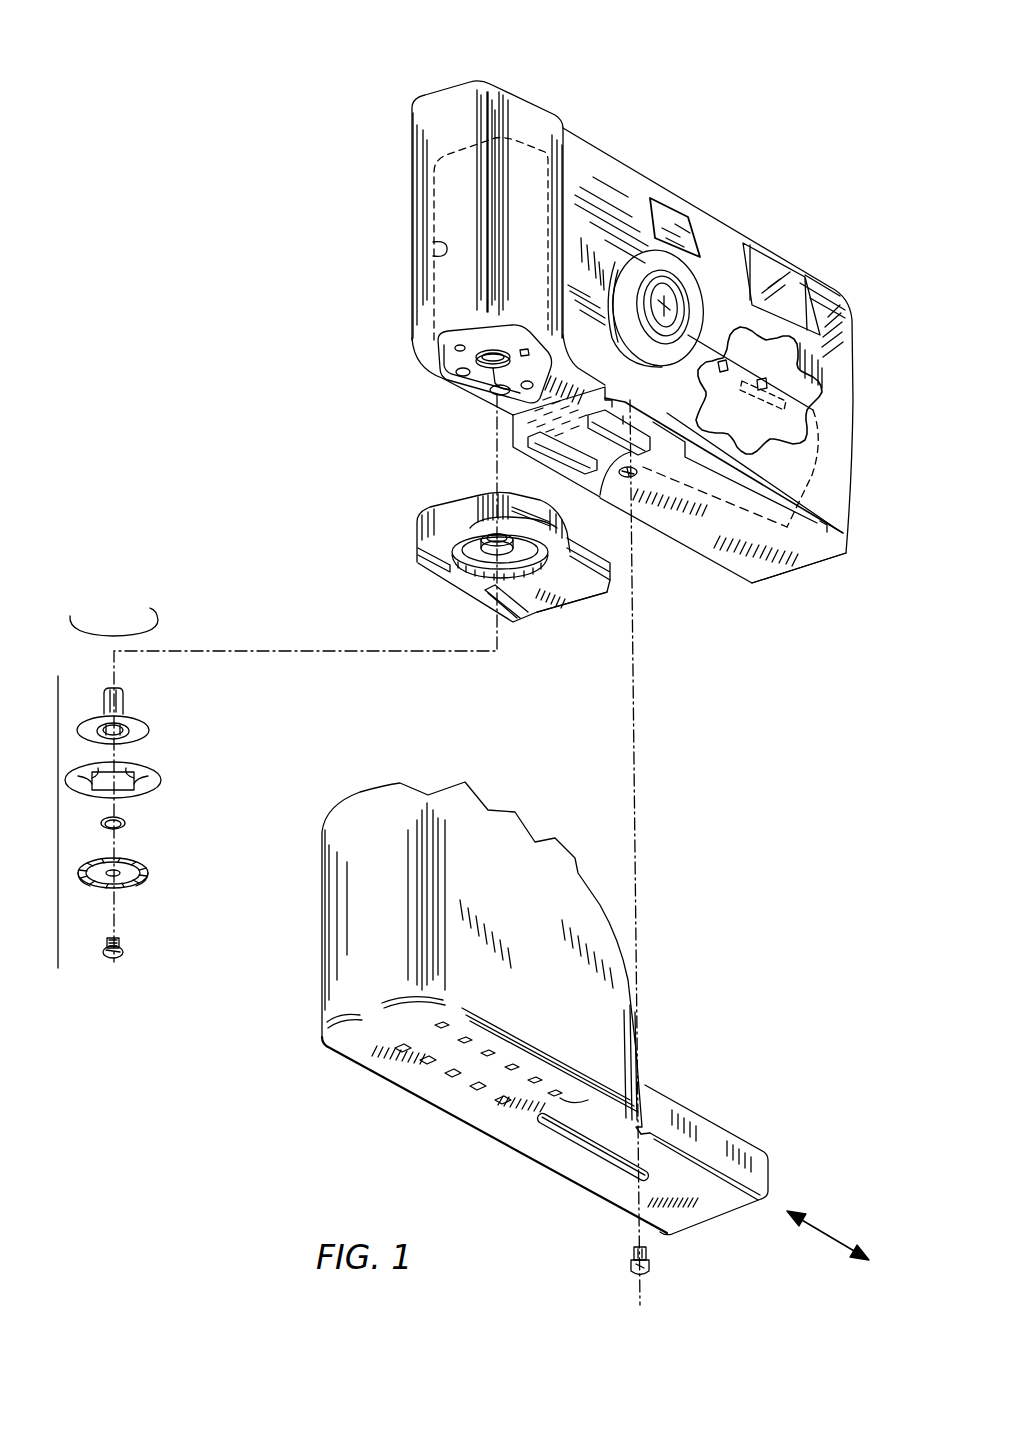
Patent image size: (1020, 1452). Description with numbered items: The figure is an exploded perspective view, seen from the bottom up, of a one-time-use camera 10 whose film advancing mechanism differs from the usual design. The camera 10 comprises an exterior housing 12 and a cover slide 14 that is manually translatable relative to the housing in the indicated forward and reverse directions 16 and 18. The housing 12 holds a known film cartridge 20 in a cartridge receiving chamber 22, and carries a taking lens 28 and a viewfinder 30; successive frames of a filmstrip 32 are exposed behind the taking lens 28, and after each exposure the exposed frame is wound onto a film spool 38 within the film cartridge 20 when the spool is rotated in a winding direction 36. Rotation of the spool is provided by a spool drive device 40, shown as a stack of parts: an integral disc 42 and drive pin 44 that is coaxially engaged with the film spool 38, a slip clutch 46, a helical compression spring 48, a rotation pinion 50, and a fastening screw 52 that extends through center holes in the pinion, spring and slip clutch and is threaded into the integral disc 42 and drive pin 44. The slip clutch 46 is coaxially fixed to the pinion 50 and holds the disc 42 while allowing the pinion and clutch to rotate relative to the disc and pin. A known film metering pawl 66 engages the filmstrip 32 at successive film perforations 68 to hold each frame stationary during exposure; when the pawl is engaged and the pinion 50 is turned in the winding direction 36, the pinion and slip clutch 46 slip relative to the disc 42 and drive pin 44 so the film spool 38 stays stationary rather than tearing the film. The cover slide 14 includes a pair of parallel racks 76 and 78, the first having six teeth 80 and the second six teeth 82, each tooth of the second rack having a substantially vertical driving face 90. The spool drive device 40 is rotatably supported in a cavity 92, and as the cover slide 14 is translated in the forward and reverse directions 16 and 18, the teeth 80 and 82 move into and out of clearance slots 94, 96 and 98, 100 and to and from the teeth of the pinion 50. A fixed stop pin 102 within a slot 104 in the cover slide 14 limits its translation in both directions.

The one-time-use camera 10 is at (416, 62).
The exterior housing 12 is at (527, 96).
The cover slide 14 is at (772, 1163).
The forward direction 16 is at (793, 1215).
The reverse direction 18 is at (865, 1260).
The film cartridge 20 is at (445, 208).
The cartridge receiving chamber 22 is at (436, 250).
The taking lens 28 is at (665, 293).
The viewfinder 30 is at (663, 213).
The filmstrip 32 is at (803, 470).
The winding direction 36 is at (101, 609).
The film spool 38 is at (488, 364).
The spool drive device 40 is at (58, 676).
The integral disc 42 is at (143, 730).
The drive pin 44 is at (125, 700).
The slip clutch 46 is at (158, 778).
The helical compression spring 48 is at (125, 824).
The rotation pinion 50 is at (148, 868).
The fastening screw 52 is at (124, 940).
The film metering pawl 66 is at (836, 428).
The film perforations 68 is at (768, 392).
The rack 76 is at (398, 1072).
The rack 78 is at (485, 1040).
The teeth 80 is at (495, 1102).
The teeth 82 is at (542, 1076).
The driving face 90 is at (560, 1098).
The cavity 92 is at (452, 566).
The clearance slot 94 is at (548, 438).
The clearance slot 96 is at (538, 617).
The clearance slot 98 is at (598, 476).
The clearance slot 100 is at (596, 600).
The fixed stop pin 102 is at (655, 1263).
The slot 104 is at (592, 1153).